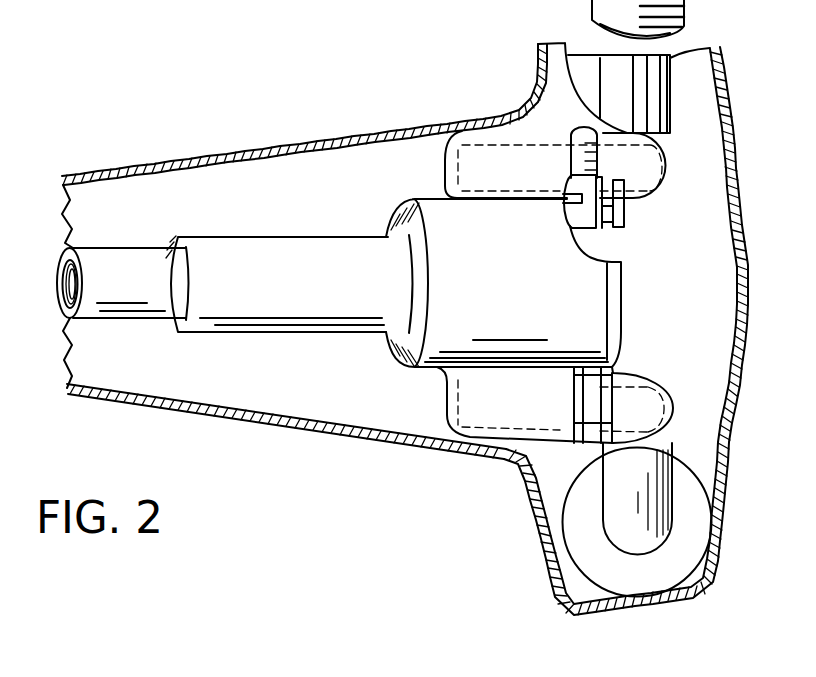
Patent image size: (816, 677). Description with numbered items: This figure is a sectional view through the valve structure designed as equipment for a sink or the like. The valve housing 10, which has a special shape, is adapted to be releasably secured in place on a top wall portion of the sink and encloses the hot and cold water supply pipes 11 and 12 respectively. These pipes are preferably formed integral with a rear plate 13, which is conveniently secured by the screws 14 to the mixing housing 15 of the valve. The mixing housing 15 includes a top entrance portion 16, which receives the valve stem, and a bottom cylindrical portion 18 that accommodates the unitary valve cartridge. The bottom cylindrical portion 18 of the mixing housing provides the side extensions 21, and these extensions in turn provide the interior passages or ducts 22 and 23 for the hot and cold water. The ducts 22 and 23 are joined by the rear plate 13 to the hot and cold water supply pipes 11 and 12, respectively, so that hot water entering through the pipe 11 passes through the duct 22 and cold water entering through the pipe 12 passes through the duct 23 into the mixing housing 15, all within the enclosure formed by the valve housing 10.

The valve housing 10 is at (268, 145).
The hot water supply pipe 11 is at (618, 514).
The cold water supply pipe 12 is at (623, 77).
The rear plate 13 is at (622, 323).
The screws 14 is at (605, 262).
The mixing housing 15 is at (242, 235).
The top entrance portion 16 is at (121, 283).
The bottom cylindrical portion 18 is at (513, 283).
The side extensions 21 is at (447, 410).
The hot water duct 22 is at (548, 421).
The cold water duct 23 is at (507, 146).